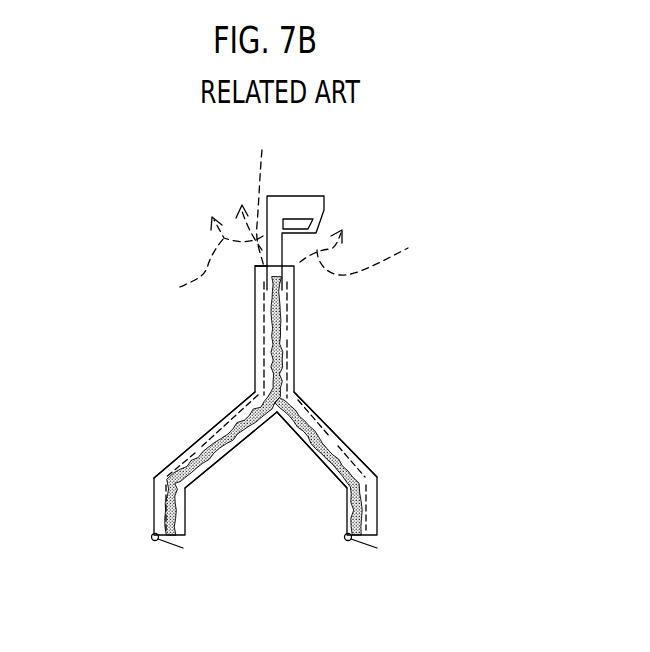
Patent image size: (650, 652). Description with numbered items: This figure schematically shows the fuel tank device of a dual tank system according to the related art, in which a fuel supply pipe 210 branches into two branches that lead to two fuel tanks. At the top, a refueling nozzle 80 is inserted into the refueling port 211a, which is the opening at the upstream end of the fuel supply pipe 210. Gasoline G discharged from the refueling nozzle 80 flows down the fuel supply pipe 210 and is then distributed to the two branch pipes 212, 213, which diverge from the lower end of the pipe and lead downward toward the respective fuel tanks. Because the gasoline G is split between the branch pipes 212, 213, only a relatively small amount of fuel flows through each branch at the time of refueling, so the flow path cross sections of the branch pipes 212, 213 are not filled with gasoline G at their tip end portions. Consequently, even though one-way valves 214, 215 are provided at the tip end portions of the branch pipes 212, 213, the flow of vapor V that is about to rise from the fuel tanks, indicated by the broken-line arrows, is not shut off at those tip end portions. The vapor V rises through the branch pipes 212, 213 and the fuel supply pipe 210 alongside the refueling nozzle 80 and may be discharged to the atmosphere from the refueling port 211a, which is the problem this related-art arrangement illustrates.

The refueling nozzle 80 is at (324, 211).
The fuel supply pipe 210 is at (298, 327).
The refueling port 211a is at (255, 266).
The branch pipe 212 is at (343, 441).
The branch pipe 213 is at (207, 434).
The one-way valve 214 is at (360, 546).
The one-way valve 215 is at (170, 547).
The gasoline G is at (281, 352).
The vapor V is at (293, 213).